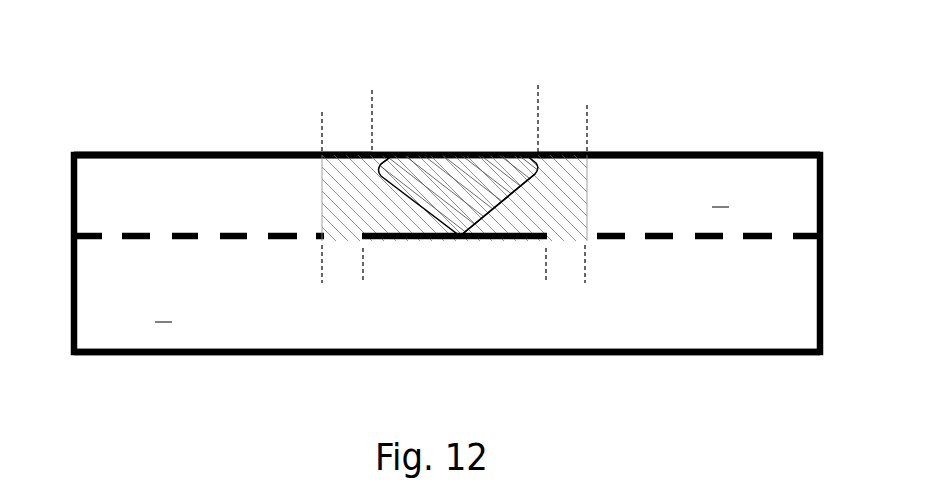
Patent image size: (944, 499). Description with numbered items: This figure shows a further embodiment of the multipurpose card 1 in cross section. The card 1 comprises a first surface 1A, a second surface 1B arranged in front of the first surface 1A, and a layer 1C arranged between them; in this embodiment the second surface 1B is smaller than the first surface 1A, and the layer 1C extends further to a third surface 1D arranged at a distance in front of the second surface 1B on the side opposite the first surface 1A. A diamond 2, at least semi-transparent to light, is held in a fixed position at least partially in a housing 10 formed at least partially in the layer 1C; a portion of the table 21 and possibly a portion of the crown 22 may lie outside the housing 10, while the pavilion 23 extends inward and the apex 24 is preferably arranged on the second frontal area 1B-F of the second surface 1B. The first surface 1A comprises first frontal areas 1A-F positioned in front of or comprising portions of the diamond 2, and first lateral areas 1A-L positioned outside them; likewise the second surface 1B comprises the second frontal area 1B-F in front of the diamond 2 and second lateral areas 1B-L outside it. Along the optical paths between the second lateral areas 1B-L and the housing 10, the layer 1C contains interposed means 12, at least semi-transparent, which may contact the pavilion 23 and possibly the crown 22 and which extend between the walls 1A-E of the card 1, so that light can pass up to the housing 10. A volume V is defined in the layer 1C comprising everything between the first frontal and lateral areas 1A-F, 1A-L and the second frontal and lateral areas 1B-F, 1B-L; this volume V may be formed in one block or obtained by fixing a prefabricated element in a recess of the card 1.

The multipurpose card 1 is at (177, 108).
The first surface 1A is at (601, 147).
The second surface 1B is at (490, 280).
The layer 1C is at (442, 258).
The third surface 1D is at (280, 369).
The walls of the card 1A-E is at (323, 154).
The first lateral areas 1A-L is at (351, 136).
The first frontal areas 1A-F is at (467, 135).
The second lateral areas 1B-L is at (343, 243).
The second frontal areas 1B-F is at (418, 243).
The diamond 2 is at (398, 218).
The housing 10 is at (532, 153).
The interposed means 12 is at (337, 185).
The table 21 is at (427, 151).
The crown 22 is at (390, 152).
The pavilion 23 is at (515, 187).
The apex 24 is at (453, 227).
The volume V is at (313, 210).